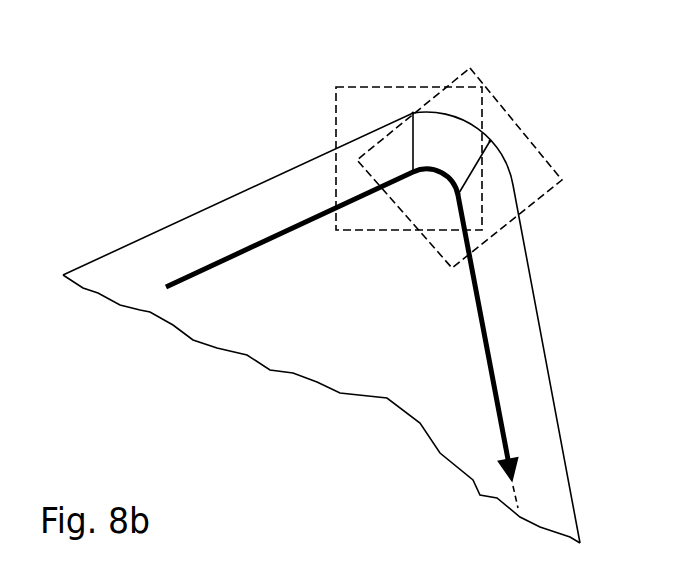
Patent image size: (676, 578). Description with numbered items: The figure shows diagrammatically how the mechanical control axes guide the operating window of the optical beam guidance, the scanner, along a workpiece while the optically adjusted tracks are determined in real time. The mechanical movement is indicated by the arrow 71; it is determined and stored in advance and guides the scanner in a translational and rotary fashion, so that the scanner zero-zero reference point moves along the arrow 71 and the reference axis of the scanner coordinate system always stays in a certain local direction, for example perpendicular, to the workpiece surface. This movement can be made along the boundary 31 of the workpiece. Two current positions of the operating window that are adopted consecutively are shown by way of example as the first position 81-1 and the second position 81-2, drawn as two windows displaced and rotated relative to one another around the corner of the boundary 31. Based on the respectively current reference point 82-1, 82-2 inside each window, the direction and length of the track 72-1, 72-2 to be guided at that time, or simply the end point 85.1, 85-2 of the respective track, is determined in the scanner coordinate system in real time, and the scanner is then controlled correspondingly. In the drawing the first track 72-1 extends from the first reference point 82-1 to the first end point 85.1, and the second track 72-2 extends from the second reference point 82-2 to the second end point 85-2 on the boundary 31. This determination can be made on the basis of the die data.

The boundary 31 is at (157, 291).
The movement arrow 71 is at (233, 256).
The first track 72-1 is at (414, 148).
The second track 72-2 is at (477, 165).
The first current position of operating window 81-1 is at (360, 87).
The second current position of operating window 81-2 is at (548, 161).
The first current reference point 82-1 is at (413, 172).
The second current reference point 82-2 is at (461, 193).
The first track end point 85.1 is at (413, 113).
The second track end point 85-2 is at (490, 141).